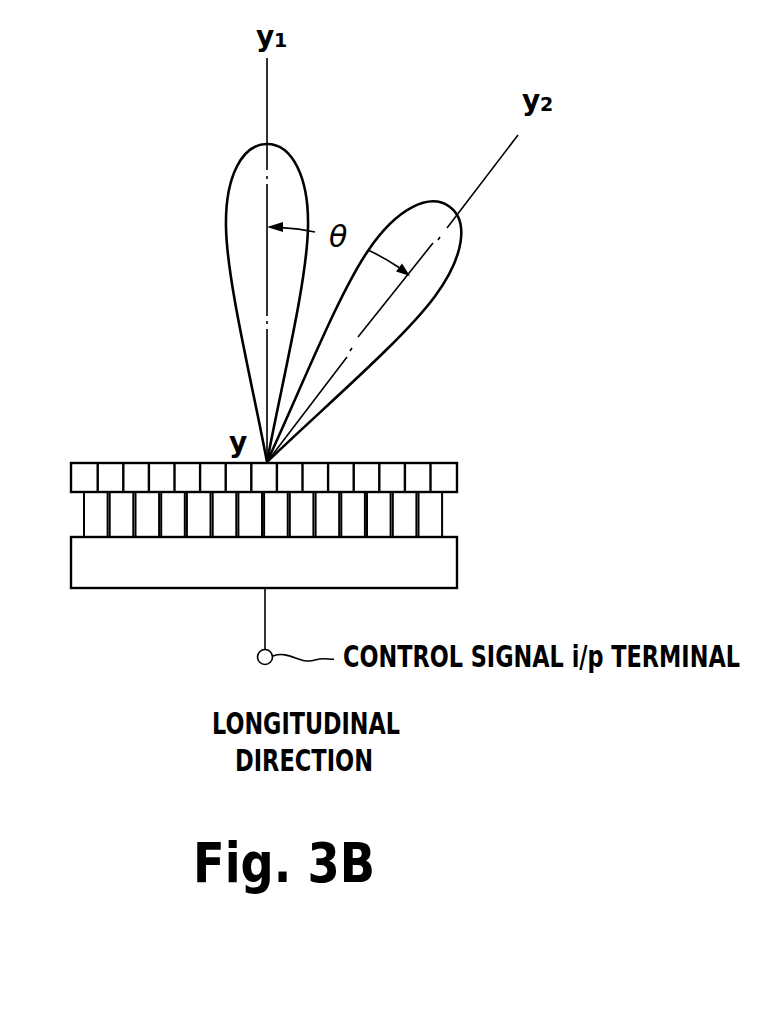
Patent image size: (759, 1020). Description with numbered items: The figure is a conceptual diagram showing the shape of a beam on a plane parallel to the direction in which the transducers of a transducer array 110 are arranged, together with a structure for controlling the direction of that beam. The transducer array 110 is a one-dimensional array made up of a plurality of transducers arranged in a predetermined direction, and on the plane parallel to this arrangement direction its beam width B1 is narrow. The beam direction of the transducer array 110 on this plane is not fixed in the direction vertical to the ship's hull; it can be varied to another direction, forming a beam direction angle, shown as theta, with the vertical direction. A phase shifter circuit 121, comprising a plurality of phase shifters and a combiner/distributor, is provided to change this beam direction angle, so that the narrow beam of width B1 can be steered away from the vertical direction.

The transducer array 110 is at (117, 458).
The phase shifter circuit 121 is at (130, 588).
The beam width B1 is at (232, 186).